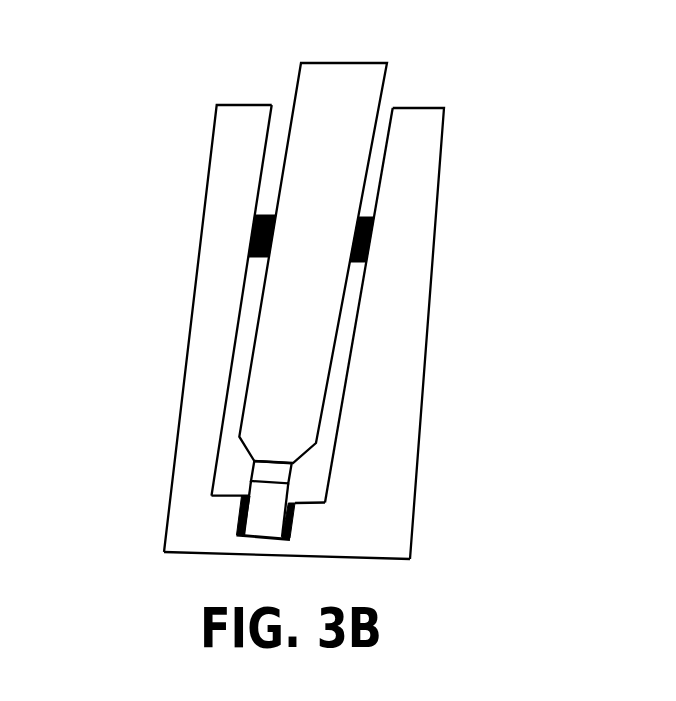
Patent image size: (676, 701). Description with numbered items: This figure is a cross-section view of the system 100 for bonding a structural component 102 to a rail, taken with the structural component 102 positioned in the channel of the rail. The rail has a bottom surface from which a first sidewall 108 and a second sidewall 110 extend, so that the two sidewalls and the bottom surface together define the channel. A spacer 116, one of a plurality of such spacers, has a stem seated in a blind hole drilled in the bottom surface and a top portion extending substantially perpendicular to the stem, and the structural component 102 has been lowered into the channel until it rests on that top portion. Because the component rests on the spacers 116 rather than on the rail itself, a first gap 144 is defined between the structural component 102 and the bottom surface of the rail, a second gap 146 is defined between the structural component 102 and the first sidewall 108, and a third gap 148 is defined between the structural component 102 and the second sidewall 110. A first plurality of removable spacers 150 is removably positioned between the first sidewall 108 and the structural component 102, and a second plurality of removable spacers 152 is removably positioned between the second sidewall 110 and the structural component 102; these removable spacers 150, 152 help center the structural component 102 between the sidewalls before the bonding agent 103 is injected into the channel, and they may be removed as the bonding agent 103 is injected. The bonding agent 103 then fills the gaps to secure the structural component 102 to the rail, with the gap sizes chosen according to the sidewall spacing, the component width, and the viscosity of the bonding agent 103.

The system 100 is at (485, 75).
The structural component 102 is at (297, 90).
The bonding agent 103 is at (240, 532).
The first sidewall 108 is at (205, 198).
The second sidewall 110 is at (428, 136).
The spacers 116 is at (250, 485).
The first gap 144 is at (302, 483).
The second gap 146 is at (250, 313).
The third gap 148 is at (338, 368).
The first plurality of removable spacers 150 is at (250, 242).
The second plurality of removable spacers 152 is at (376, 222).